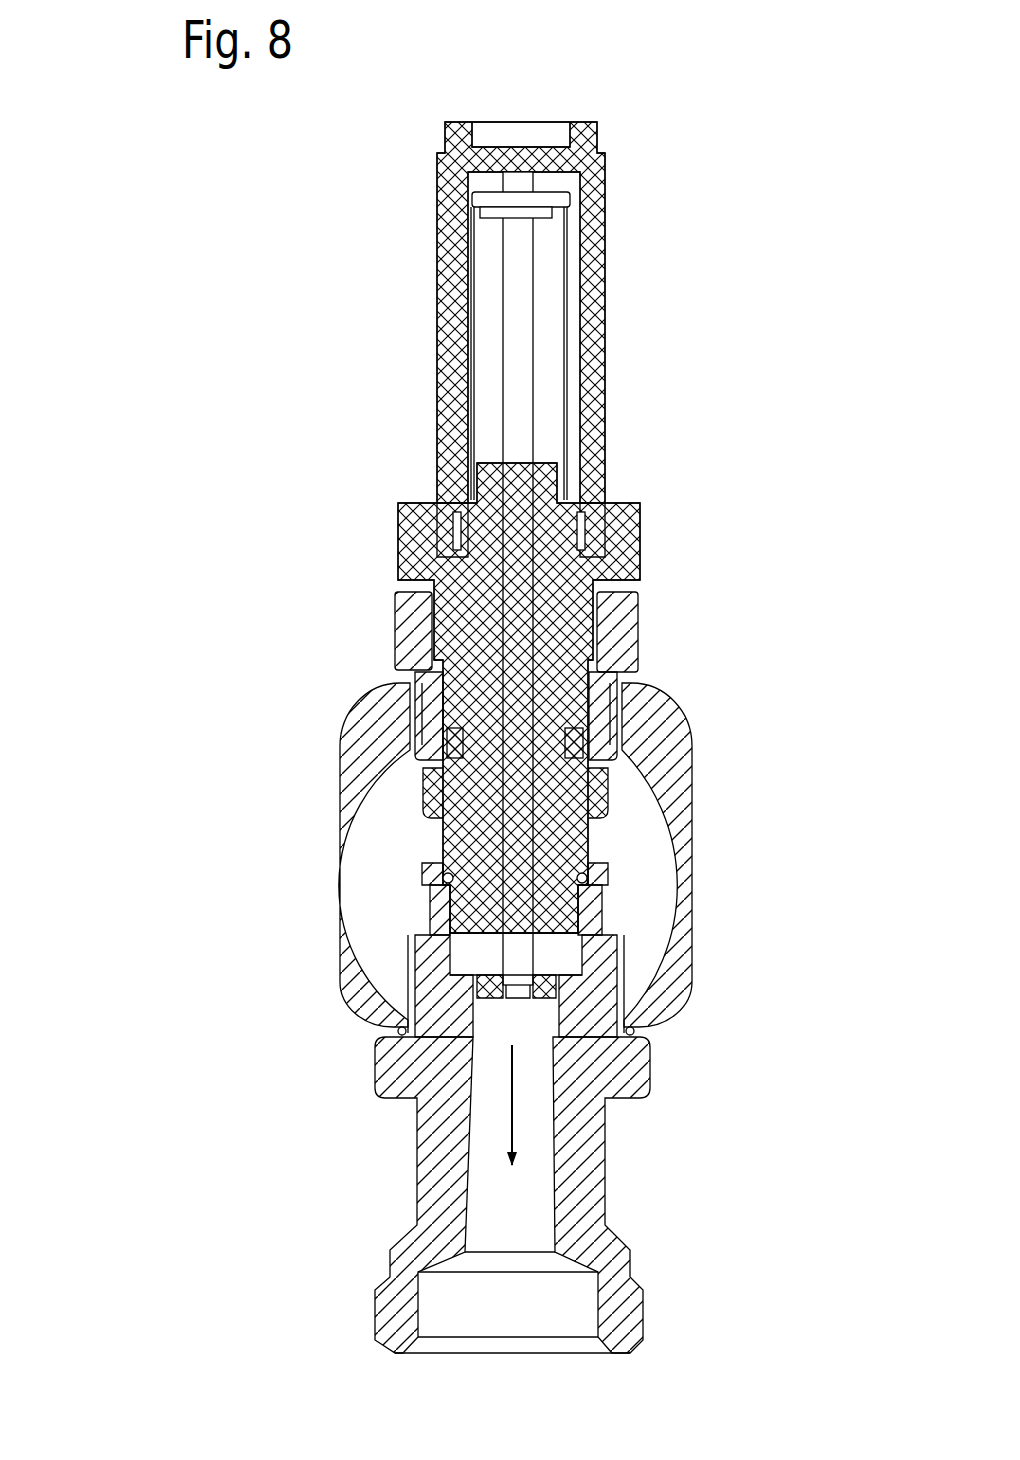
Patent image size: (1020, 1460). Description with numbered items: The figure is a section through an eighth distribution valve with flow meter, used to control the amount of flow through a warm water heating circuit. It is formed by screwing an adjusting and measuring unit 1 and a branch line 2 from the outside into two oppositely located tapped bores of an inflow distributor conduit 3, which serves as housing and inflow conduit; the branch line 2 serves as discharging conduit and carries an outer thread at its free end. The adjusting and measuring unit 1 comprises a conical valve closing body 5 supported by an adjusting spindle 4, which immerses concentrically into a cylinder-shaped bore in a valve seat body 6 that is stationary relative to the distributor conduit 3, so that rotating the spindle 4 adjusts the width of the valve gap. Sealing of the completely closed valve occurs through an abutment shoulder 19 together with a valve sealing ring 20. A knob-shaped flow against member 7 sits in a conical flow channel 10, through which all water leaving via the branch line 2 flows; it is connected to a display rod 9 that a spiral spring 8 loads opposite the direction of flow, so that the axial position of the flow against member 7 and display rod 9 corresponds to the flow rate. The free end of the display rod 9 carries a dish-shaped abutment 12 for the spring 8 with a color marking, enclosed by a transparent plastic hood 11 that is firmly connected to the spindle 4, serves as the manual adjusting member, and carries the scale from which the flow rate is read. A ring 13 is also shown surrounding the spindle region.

The adjusting and measuring unit 1 is at (300, 580).
The branch line 2 is at (440, 1142).
The inflow distributor conduit 3 is at (645, 722).
The adjusting spindle 4 is at (595, 630).
The valve closing body 5 is at (575, 920).
The valve seat body 6 is at (590, 898).
The flow against member 7 is at (560, 990).
The spiral spring 8 is at (468, 315).
The display rod 9 is at (518, 313).
The flow channel 10 is at (535, 1228).
The transparent plastic hood 11 is at (600, 168).
The dish-shaped abutment 12 is at (508, 200).
The ring 13 is at (410, 635).
The abutment shoulder 19 is at (440, 865).
The valve sealing ring 20 is at (445, 878).